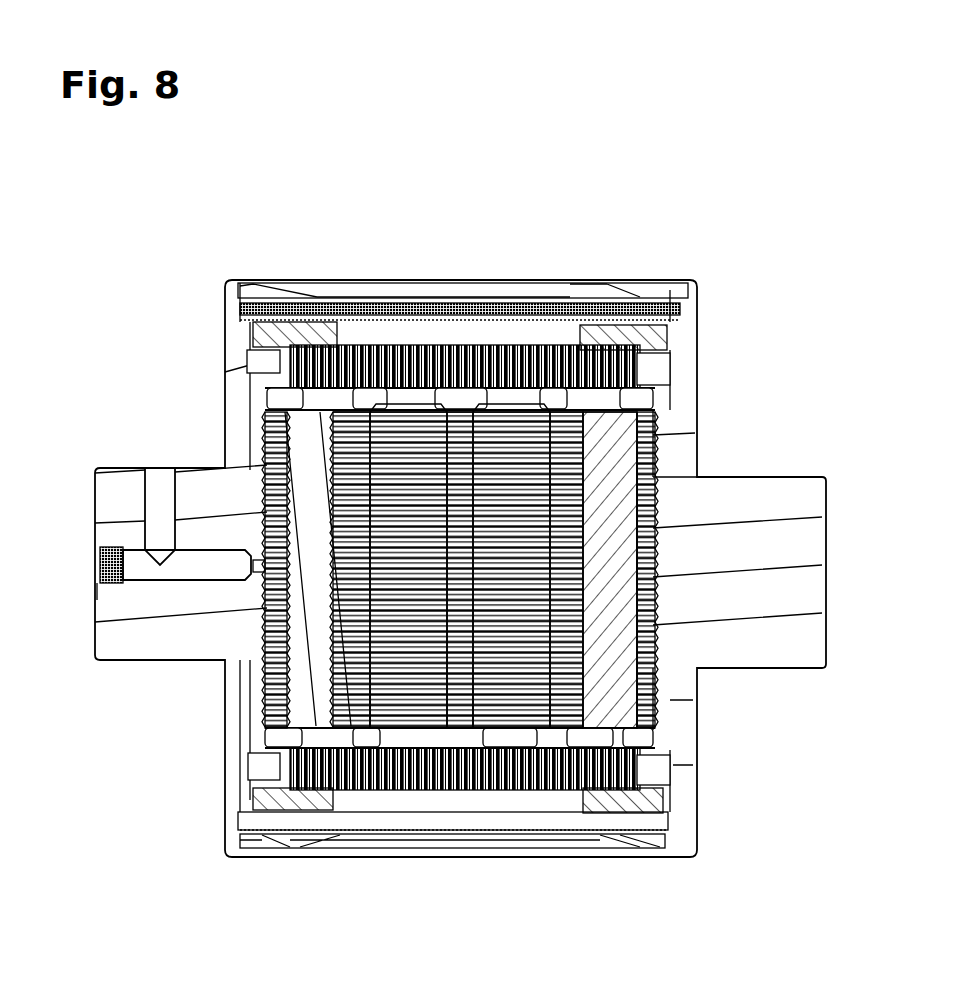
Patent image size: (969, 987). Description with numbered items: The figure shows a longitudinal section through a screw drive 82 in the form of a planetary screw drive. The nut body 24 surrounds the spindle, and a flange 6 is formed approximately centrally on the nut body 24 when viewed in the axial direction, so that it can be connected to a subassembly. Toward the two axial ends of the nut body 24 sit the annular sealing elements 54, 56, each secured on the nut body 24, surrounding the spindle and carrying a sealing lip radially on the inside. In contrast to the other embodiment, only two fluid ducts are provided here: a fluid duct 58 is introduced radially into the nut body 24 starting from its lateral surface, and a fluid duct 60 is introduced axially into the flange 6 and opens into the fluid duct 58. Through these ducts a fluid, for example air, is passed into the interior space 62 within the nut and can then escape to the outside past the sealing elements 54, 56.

The screw drive 82 is at (775, 196).
The nut body 24 is at (683, 740).
The flange 6 is at (808, 498).
The sealing element 56 is at (653, 292).
The sealing element 54 is at (660, 852).
The fluid duct 58 is at (150, 470).
The fluid duct 60 is at (191, 570).
The interior space 62 is at (614, 491).